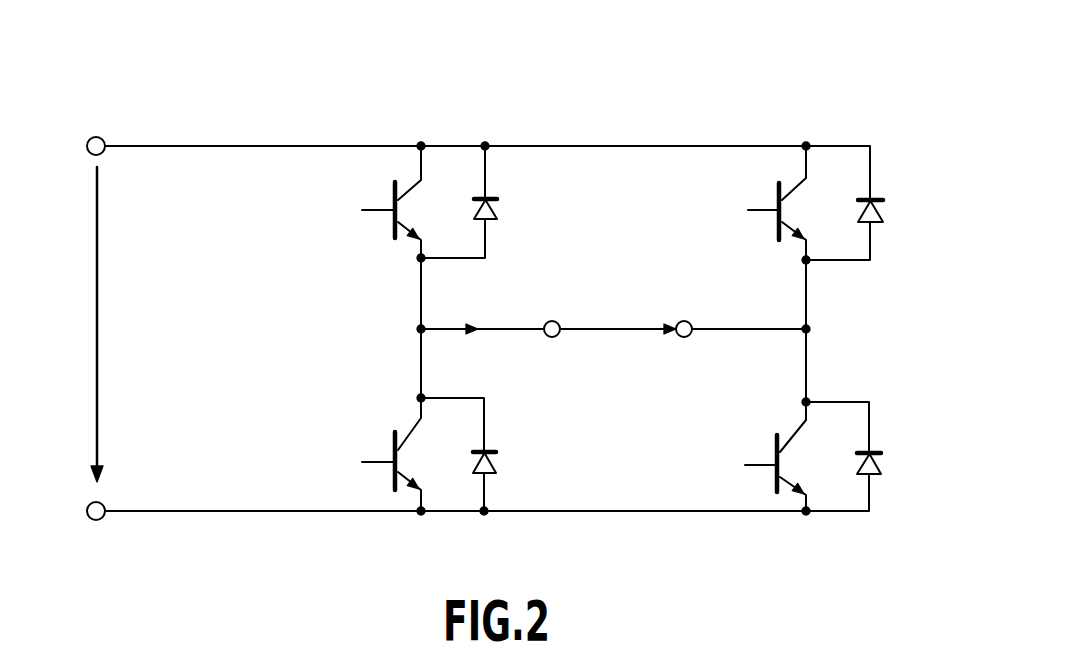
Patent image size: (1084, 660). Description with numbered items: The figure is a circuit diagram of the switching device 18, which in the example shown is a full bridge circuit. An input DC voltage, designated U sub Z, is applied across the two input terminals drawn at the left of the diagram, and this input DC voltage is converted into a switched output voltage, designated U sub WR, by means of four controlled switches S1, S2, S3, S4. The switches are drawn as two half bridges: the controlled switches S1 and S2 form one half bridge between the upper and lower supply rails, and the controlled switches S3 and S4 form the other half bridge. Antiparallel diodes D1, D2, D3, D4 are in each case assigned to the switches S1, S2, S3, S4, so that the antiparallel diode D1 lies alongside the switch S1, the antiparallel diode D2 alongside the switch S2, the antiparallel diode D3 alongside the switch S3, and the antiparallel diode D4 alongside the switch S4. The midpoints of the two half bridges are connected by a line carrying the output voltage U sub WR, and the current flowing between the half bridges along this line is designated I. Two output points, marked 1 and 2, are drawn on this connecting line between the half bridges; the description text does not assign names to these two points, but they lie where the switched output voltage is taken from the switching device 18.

The switching device 18 is at (369, 109).
The first output terminal 1 is at (551, 345).
The second output terminal 2 is at (683, 345).
The controlled switch S1 is at (386, 202).
The controlled switch S2 is at (386, 454).
The controlled switch S3 is at (771, 203).
The controlled switch S4 is at (770, 456).
The antiparallel diode D1 is at (476, 202).
The antiparallel diode D2 is at (476, 454).
The antiparallel diode D3 is at (865, 230).
The antiparallel diode D4 is at (863, 441).